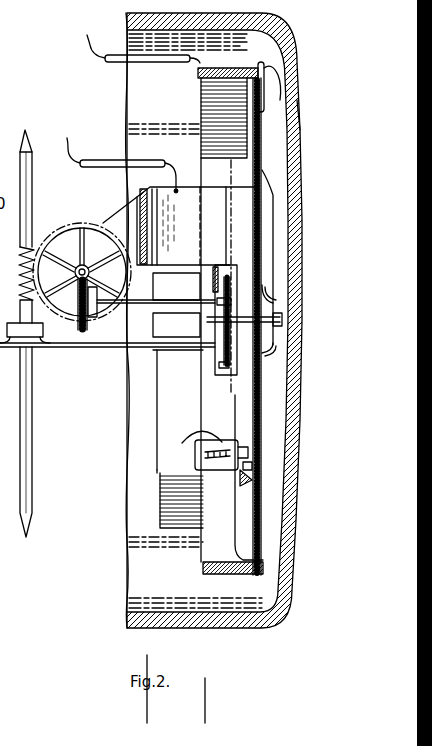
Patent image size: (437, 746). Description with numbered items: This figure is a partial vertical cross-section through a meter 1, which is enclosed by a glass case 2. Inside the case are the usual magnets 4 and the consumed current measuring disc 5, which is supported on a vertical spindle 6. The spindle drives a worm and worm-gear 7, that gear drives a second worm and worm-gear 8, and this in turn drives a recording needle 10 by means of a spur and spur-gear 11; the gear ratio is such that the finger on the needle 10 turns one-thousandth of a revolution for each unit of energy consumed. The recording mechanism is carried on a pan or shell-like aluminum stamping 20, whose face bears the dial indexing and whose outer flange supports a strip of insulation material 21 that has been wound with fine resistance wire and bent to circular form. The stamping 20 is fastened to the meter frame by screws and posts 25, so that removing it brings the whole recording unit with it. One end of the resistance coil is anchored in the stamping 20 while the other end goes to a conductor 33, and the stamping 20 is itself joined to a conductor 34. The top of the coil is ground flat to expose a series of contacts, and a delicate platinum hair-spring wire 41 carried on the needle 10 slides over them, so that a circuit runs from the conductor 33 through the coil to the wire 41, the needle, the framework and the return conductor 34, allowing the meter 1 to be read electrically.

The meter 1 is at (95, 598).
The glass case 2 is at (268, 612).
The magnets 4 is at (173, 431).
The consumed current measuring disc 5 is at (80, 346).
The vertical spindle 6 is at (34, 420).
The worm and worm-gear 7 is at (60, 232).
The worm and worm-gear 8 is at (78, 312).
The recording needle 10 is at (268, 194).
The spur and spur-gear 11 is at (214, 360).
The pan or shell-like aluminum stamping 20 is at (200, 97).
The strip of insulation material 21 is at (235, 63).
The screws and posts 25 is at (230, 438).
The conductor 33 is at (110, 54).
The conductor 34 is at (106, 160).
The hair-spring wire 41 is at (289, 63).